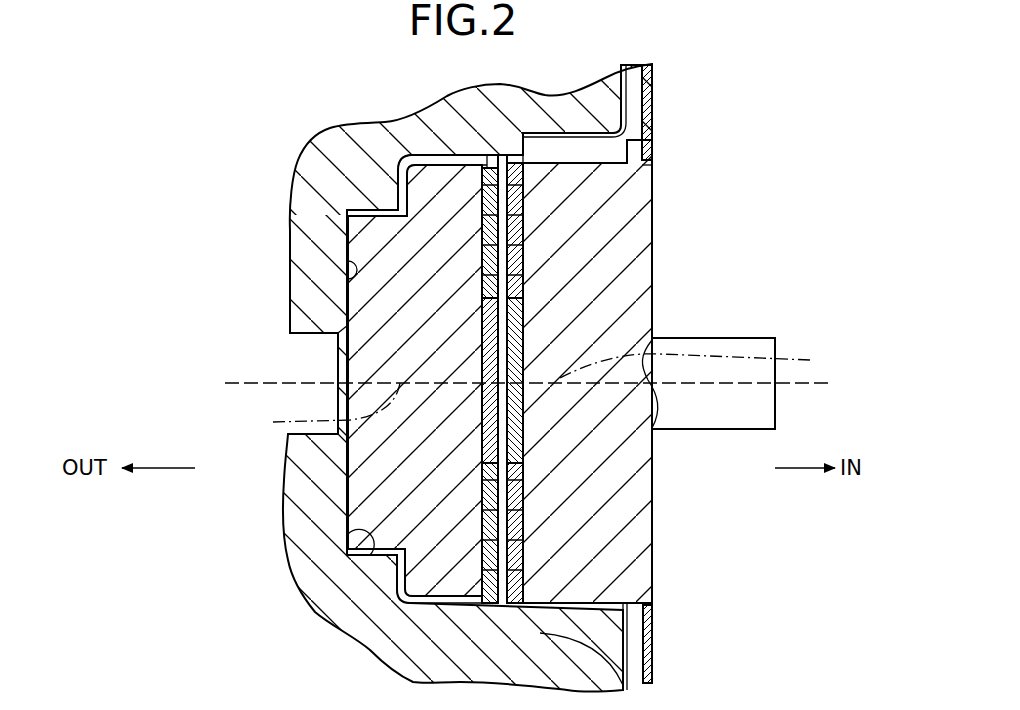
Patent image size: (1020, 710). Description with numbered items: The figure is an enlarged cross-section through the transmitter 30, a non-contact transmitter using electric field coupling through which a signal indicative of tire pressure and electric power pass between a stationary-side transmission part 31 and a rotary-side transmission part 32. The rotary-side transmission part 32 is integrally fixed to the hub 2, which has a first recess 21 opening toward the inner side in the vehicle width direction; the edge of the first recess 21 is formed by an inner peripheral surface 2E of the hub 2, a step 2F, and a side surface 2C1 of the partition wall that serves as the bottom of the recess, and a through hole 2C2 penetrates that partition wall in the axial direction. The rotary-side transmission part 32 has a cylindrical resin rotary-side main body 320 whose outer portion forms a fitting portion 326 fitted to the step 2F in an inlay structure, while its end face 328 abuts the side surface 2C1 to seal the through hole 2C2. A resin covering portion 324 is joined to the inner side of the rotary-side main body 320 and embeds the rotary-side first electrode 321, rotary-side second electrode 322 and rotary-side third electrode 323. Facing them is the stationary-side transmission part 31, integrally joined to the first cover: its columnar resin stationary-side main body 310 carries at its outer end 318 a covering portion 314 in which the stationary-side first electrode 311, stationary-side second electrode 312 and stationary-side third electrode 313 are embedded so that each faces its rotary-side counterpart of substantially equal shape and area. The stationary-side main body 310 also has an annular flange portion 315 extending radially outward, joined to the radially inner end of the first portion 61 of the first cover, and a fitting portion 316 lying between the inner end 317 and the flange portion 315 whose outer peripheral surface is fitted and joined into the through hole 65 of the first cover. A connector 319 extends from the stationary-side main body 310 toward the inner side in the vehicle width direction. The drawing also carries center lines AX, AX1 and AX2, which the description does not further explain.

The hub 2 is at (410, 380).
The first recess 21 is at (530, 148).
The side surface 2C1 is at (350, 279).
The through hole 2C2 is at (310, 348).
The inner peripheral surface 2E is at (460, 607).
The step 2F is at (397, 553).
The transmitter 30 is at (667, 490).
The stationary-side transmission part 31 is at (656, 292).
The rotary-side transmission part 32 is at (346, 298).
The through hole 65 is at (652, 172).
The first portion 61 is at (652, 660).
The stationary-side main body 310 is at (580, 440).
The stationary-side first electrode 311 is at (523, 187).
The stationary-side second electrode 312 is at (523, 227).
The stationary-side third electrode 313 is at (523, 267).
The covering portion 314 is at (510, 157).
The flange portion 315 is at (630, 140).
The fitting portion 316 is at (652, 585).
The inner end 317 is at (652, 550).
The outer end 318 is at (398, 430).
The connector 319 is at (750, 338).
The rotary-side main body 320 is at (433, 470).
The rotary-side first electrode 321 is at (483, 187).
The rotary-side second electrode 322 is at (483, 227).
The rotary-side third electrode 323 is at (483, 267).
The covering portion 324 is at (492, 153).
The fitting portion 326 is at (367, 512).
The end face 328 is at (333, 399).
The axis AX is at (248, 383).
The axis AX1 is at (311, 410).
The axis AX2 is at (705, 363).